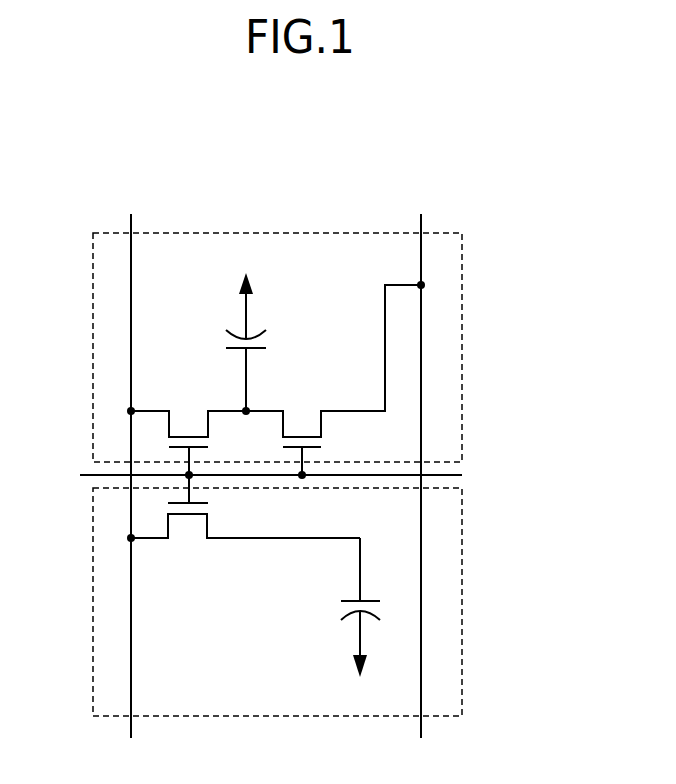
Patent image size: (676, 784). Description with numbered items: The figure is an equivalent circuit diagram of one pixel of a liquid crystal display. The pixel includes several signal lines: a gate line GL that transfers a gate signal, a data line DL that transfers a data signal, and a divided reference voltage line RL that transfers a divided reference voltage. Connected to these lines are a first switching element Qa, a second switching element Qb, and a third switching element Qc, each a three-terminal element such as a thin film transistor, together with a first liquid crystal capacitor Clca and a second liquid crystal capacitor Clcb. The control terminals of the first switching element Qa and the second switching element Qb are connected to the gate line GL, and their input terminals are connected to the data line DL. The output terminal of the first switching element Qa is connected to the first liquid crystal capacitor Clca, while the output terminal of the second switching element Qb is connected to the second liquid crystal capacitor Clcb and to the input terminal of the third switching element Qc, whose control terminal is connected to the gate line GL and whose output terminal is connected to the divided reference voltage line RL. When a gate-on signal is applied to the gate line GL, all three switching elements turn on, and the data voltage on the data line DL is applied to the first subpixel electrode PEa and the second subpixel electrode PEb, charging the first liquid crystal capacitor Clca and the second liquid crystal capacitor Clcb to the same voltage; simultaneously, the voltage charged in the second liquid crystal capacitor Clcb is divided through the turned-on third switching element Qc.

The data line DL is at (132, 462).
The divided reference voltage line RL is at (420, 462).
The gate line GL is at (255, 476).
The first switching element Qa is at (243, 520).
The second switching element Qb is at (186, 431).
The third switching element Qc is at (333, 380).
The first liquid crystal capacitor Clca is at (329, 607).
The second liquid crystal capacitor Clcb is at (279, 342).
The first subpixel electrode PEa is at (462, 601).
The second subpixel electrode PEb is at (462, 347).